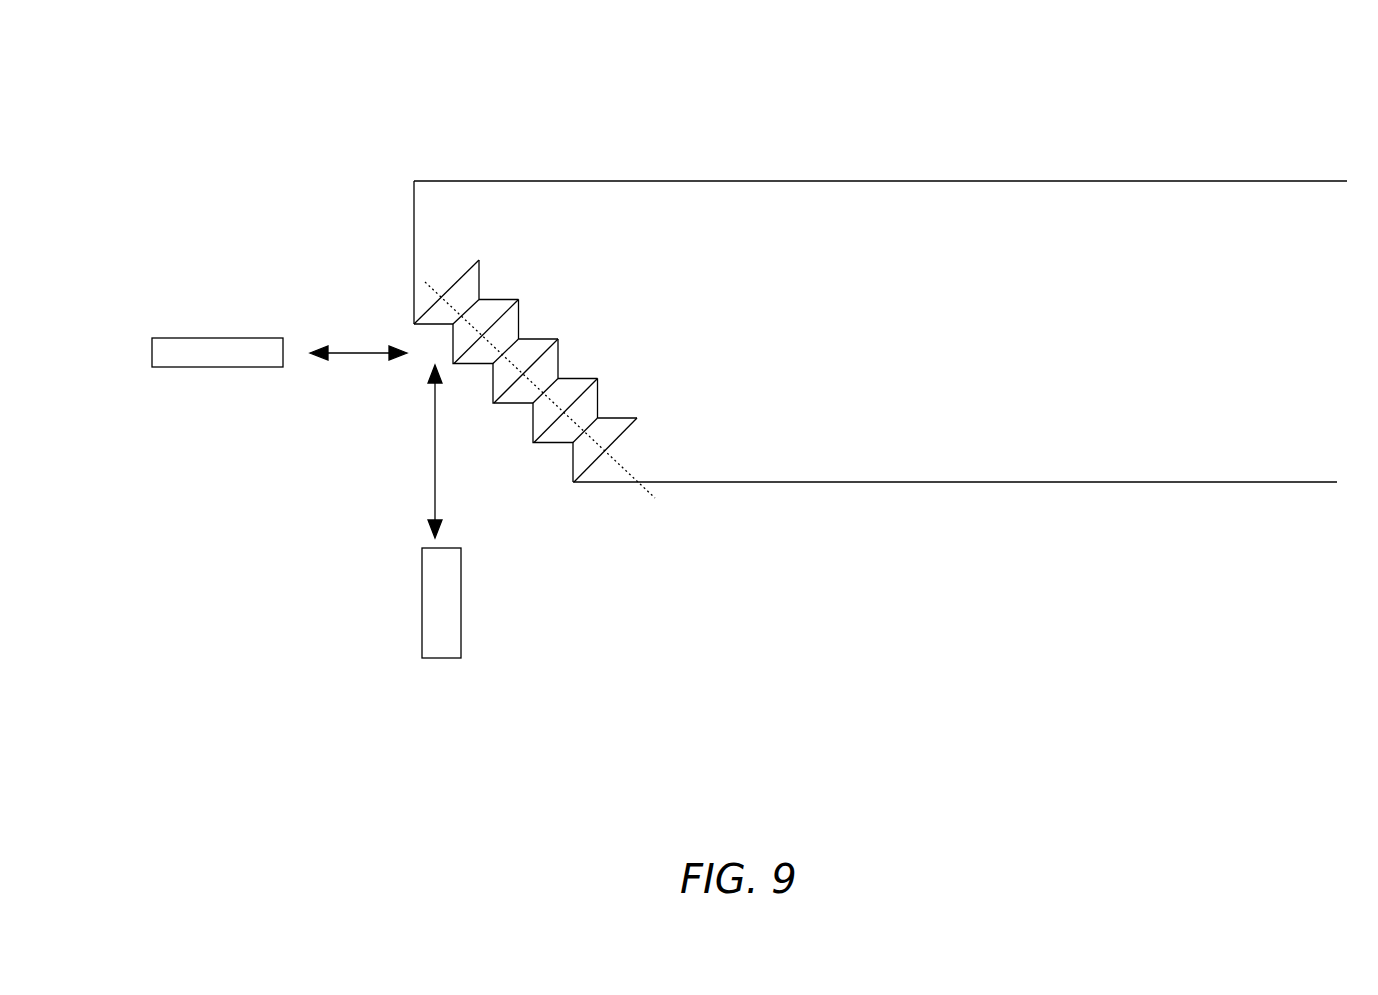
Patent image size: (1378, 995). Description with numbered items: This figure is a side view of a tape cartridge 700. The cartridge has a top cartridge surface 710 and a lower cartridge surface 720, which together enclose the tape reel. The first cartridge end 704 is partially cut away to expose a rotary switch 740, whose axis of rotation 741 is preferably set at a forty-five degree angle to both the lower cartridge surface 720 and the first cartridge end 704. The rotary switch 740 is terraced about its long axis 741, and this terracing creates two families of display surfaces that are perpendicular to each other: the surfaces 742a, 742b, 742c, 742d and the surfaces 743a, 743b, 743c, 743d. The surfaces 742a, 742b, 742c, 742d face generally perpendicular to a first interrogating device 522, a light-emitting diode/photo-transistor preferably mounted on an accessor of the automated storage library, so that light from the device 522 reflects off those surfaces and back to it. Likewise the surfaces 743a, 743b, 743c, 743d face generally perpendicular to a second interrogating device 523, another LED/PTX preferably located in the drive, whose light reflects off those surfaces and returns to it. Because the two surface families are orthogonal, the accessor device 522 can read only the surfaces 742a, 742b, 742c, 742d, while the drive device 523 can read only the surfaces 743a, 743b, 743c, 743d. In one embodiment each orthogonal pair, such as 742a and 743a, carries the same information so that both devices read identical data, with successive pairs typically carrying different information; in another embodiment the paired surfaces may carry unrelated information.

The tape cartridge 700 is at (748, 109).
The top cartridge surface 710 is at (1083, 181).
The lower cartridge surface 720 is at (1092, 482).
The first cartridge end 704 is at (413, 212).
The rotary switch 740 is at (548, 485).
The axis of rotation 741 is at (617, 459).
The display surface 742a is at (502, 298).
The display surface 742b is at (560, 348).
The display surface 742c is at (600, 378).
The display surface 742d is at (632, 417).
The display surface 743a is at (480, 277).
The display surface 743b is at (521, 318).
The display surface 743c is at (563, 362).
The display surface 743d is at (600, 400).
The first interrogating device 522 is at (214, 338).
The second interrogating device 523 is at (461, 599).